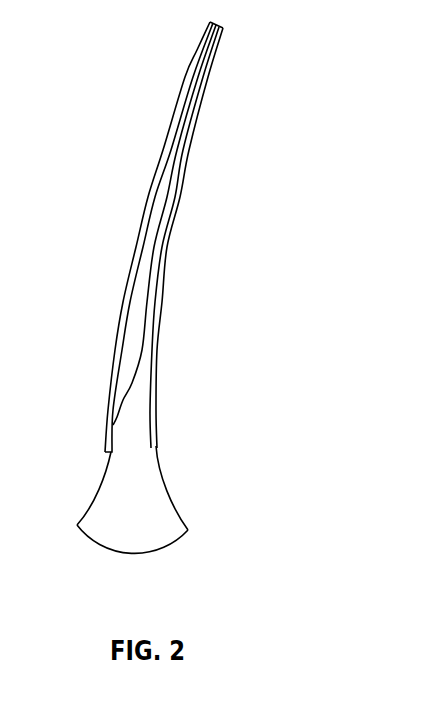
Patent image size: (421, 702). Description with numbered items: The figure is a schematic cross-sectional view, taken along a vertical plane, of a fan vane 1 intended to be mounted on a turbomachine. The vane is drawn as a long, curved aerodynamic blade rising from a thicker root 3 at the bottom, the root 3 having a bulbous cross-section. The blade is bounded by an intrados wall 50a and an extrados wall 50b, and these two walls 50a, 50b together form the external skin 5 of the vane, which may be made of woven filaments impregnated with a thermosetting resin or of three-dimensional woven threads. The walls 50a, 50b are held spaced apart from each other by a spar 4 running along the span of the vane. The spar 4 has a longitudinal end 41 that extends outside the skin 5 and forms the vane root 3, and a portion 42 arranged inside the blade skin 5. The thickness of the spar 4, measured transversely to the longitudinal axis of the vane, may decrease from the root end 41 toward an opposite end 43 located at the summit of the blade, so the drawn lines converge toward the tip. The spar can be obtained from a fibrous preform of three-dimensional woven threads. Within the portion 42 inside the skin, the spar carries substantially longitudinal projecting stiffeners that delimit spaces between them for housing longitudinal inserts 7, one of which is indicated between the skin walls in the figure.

The fan vane 1 is at (171, 299).
The root 3 is at (189, 534).
The spar 4 is at (160, 306).
The external skin 5 is at (106, 386).
The longitudinal insert 7 is at (148, 246).
The longitudinal end of the spar 41 is at (133, 461).
The portion of the spar 42 is at (140, 397).
The opposite end of the spar 43 is at (221, 44).
The intrados wall 50a is at (170, 264).
The extrados wall 50b is at (126, 282).